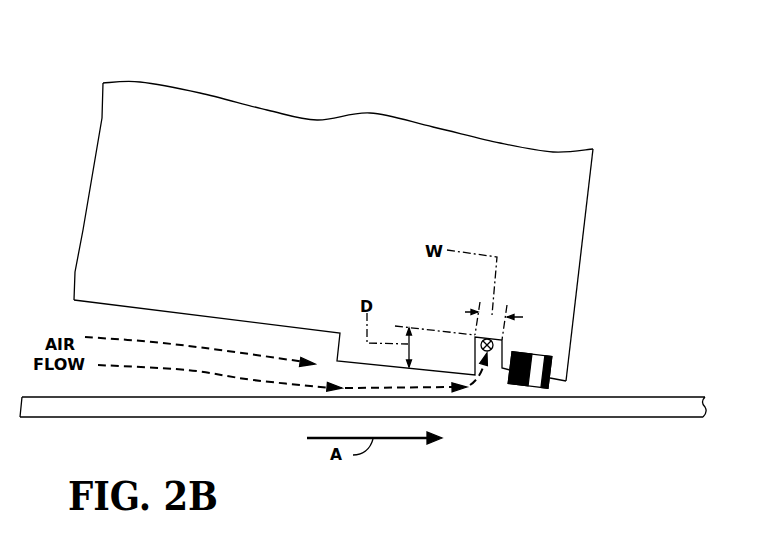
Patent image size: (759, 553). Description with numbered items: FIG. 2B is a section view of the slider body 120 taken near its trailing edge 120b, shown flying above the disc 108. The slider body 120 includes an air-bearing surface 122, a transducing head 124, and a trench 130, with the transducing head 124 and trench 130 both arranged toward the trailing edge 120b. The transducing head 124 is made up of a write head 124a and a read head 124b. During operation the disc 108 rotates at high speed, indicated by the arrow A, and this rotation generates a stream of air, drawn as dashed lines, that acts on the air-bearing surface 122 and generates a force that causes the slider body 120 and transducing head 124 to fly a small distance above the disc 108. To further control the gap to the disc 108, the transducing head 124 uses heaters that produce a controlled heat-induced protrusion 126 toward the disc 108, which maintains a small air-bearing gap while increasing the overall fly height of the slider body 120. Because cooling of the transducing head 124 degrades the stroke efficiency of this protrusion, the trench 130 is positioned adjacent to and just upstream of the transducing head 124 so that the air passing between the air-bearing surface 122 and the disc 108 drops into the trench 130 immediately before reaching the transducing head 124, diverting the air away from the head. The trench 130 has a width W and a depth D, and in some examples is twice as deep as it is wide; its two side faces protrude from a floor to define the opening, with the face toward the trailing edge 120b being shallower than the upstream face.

The disc 108 is at (642, 397).
The slider body 120 is at (367, 97).
The trailing edge 120b is at (587, 220).
The air-bearing surface 122 is at (98, 306).
The transducing head 124 is at (598, 326).
The write head 124a is at (523, 353).
The read head 124b is at (545, 353).
The heat-induced protrusion 126 is at (567, 375).
The trench 130 is at (475, 337).